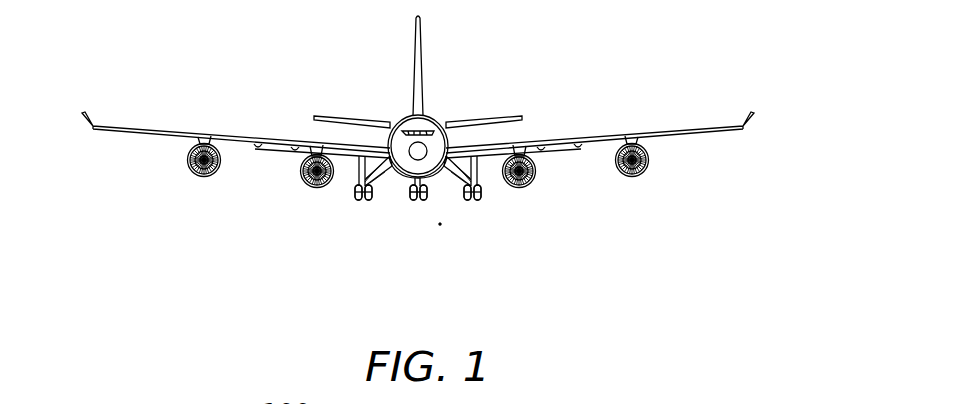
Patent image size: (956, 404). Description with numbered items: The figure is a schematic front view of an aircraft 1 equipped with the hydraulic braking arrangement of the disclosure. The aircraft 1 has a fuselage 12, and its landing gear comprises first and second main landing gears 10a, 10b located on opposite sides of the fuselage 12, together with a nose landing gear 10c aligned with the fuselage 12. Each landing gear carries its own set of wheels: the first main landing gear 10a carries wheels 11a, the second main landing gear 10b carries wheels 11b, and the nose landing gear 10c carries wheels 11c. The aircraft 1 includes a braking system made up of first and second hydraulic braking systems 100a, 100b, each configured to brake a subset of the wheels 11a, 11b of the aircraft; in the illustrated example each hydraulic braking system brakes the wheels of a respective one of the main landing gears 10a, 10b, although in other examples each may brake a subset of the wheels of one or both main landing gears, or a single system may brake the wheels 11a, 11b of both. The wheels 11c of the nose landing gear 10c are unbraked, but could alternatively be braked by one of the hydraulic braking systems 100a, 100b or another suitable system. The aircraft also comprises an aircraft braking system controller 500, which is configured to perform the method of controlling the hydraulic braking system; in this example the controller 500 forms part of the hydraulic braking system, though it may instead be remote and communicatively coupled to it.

The aircraft 1 is at (308, 88).
The aircraft braking system controller 500 is at (402, 107).
The fuselage 12 is at (444, 112).
The first main landing gear 10a is at (350, 196).
The wheels of the first main landing gear 11a is at (296, 233).
The second main landing gear 10b is at (485, 209).
The wheels of the second main landing gear 11b is at (534, 253).
The nose landing gear 10c is at (413, 208).
The wheels of the nose landing gear 11c is at (367, 256).
The first hydraulic braking system 100a is at (440, 228).
The second hydraulic braking system 100b is at (475, 275).